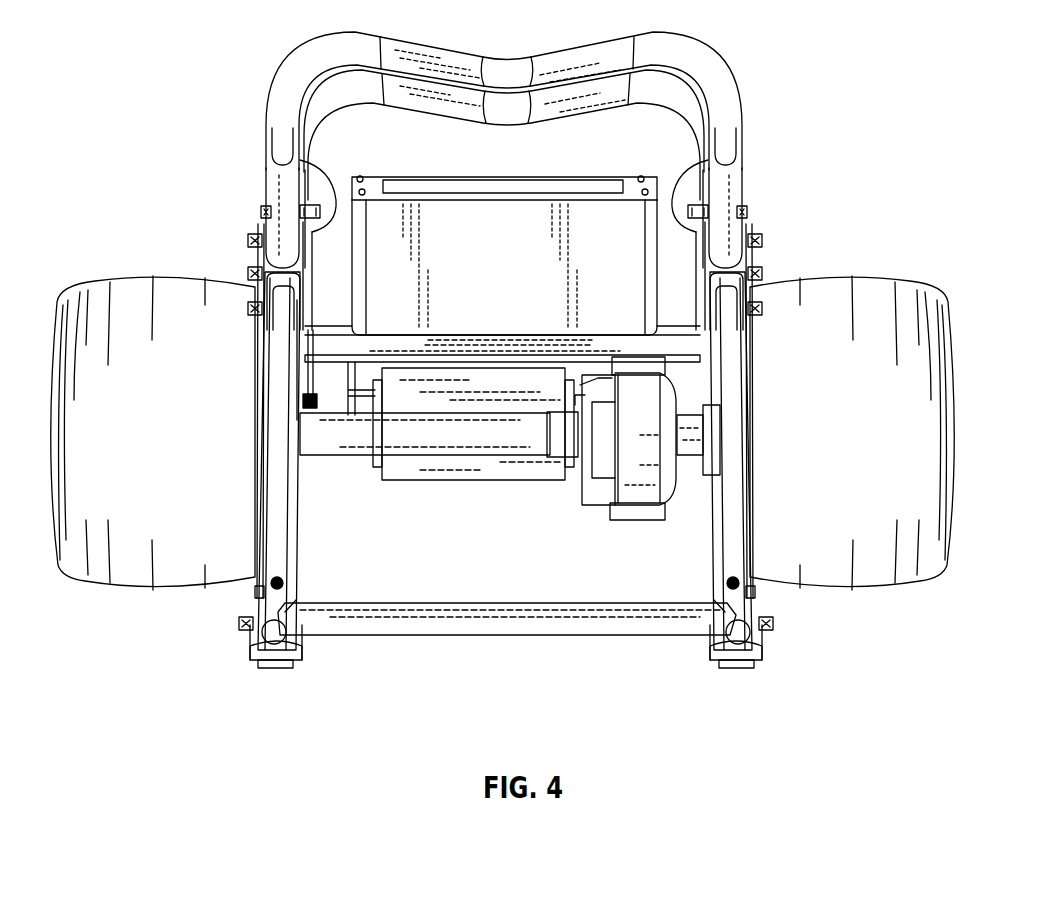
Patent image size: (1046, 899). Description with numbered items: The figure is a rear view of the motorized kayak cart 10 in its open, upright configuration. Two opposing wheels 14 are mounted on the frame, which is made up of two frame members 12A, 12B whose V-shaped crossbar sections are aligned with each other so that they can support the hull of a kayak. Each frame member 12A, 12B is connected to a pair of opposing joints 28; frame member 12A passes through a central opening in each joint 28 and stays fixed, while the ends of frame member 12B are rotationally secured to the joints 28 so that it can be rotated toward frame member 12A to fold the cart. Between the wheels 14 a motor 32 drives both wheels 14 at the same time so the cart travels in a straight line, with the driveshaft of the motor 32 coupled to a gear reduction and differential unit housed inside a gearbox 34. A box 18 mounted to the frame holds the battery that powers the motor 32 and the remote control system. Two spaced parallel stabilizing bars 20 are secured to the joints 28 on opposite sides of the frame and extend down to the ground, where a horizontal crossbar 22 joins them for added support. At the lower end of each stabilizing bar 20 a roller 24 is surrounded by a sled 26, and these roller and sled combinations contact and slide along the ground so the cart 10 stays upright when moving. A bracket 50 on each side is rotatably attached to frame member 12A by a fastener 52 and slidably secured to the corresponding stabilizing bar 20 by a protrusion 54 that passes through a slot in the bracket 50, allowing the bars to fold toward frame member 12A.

The motorized kayak cart 10 is at (248, 32).
The frame member 12A is at (700, 50).
The frame member 12B is at (727, 96).
The wheels 14 is at (187, 288).
The box 18 is at (512, 303).
The stabilizing bars 20 is at (283, 530).
The horizontal crossbar 22 is at (400, 623).
The roller 24 is at (275, 672).
The sled 26 is at (248, 632).
The joints 28 is at (254, 254).
The motor 32 is at (488, 465).
The gearbox 34 is at (636, 492).
The bracket 50 is at (330, 197).
The fastener 52 is at (261, 212).
The protrusion 54 is at (317, 402).